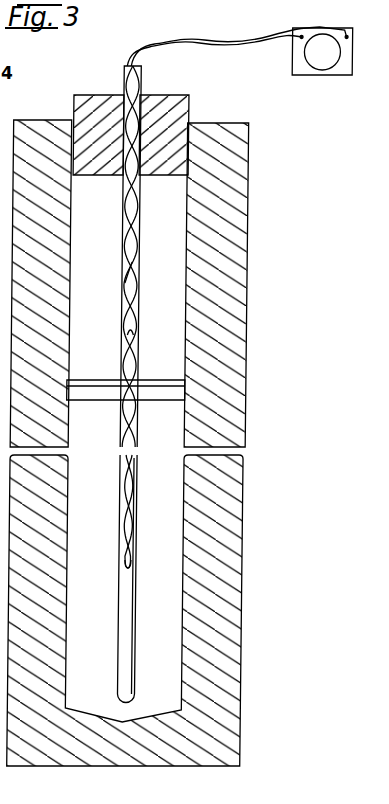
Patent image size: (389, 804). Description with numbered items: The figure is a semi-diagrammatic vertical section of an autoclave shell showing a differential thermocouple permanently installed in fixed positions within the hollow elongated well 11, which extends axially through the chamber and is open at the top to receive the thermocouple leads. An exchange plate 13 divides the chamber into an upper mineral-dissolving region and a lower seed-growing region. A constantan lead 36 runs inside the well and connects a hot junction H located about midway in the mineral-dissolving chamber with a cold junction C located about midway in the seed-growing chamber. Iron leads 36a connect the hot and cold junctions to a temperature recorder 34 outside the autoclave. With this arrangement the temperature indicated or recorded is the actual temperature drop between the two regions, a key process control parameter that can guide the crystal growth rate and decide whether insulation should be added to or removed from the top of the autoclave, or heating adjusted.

The well 11 is at (142, 223).
The lead 36 is at (136, 352).
The leads 36a is at (130, 281).
The cold junction C is at (137, 338).
The exchange plate 13 is at (151, 394).
The hot junction H is at (134, 568).
The temperature recorder 34 is at (347, 72).